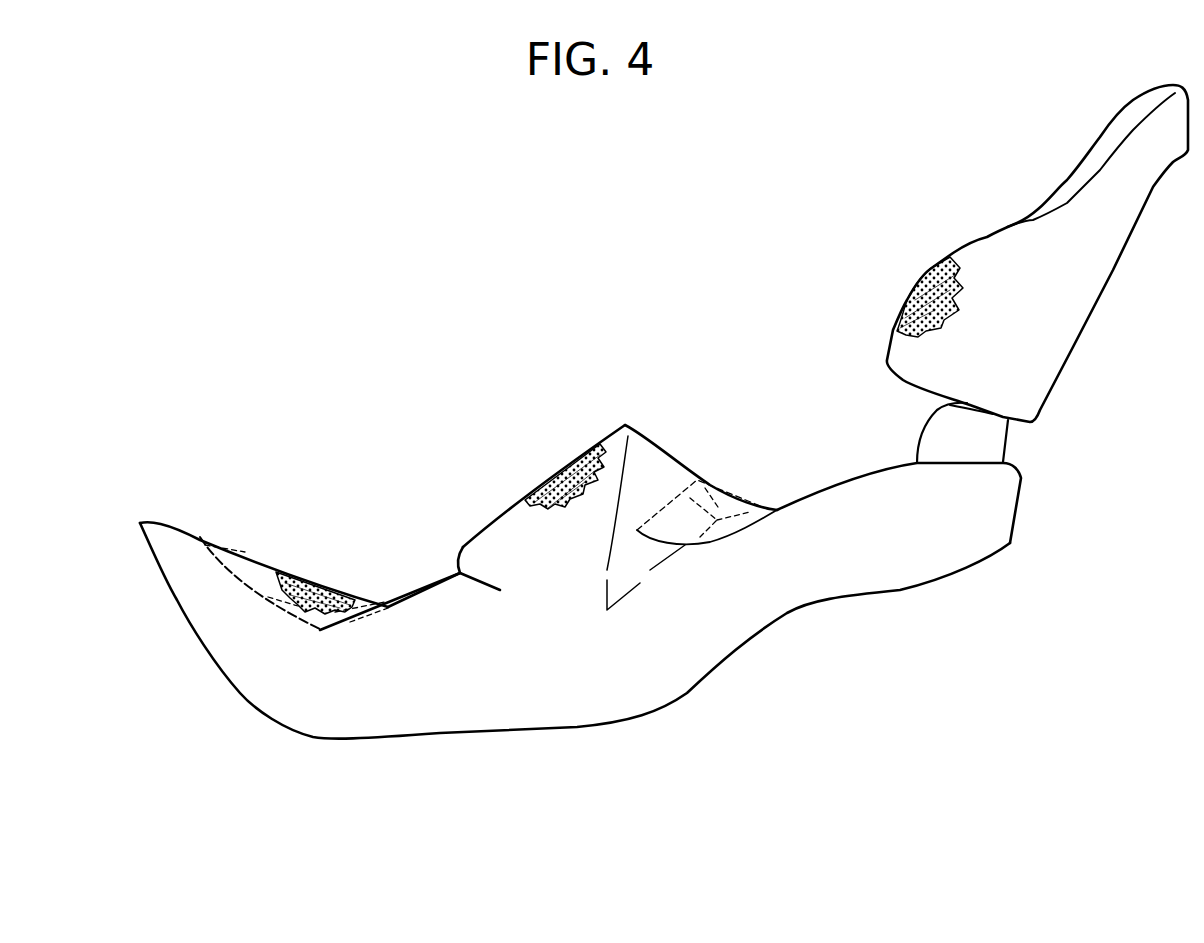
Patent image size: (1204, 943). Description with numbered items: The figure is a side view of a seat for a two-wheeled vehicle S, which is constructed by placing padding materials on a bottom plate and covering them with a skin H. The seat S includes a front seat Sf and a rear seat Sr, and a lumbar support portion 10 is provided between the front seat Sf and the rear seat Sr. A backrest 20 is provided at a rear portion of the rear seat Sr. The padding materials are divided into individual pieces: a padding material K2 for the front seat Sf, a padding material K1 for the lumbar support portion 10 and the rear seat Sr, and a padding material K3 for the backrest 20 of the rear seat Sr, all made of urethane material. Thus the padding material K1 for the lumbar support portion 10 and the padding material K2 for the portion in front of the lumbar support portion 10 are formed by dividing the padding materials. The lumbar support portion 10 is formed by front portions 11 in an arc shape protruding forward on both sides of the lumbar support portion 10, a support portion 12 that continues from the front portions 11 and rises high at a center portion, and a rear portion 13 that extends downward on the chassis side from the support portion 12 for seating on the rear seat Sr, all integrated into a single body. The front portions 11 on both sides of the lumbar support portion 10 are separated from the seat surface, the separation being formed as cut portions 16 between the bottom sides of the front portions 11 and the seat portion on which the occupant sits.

The seat for a two-wheeled vehicle S is at (410, 192).
The backrest 20 is at (1014, 190).
The lumbar support portion 10 is at (750, 807).
The front portions 11 is at (563, 580).
The support portion 12 is at (643, 490).
The rear portion 13 is at (730, 537).
The cut portions 16 is at (463, 577).
The front seat Sf is at (259, 525).
The rear seat Sr is at (804, 469).
The padding material K1 is at (537, 487).
The padding material K2 is at (293, 580).
The padding material K3 is at (923, 293).
The skin H is at (910, 307).